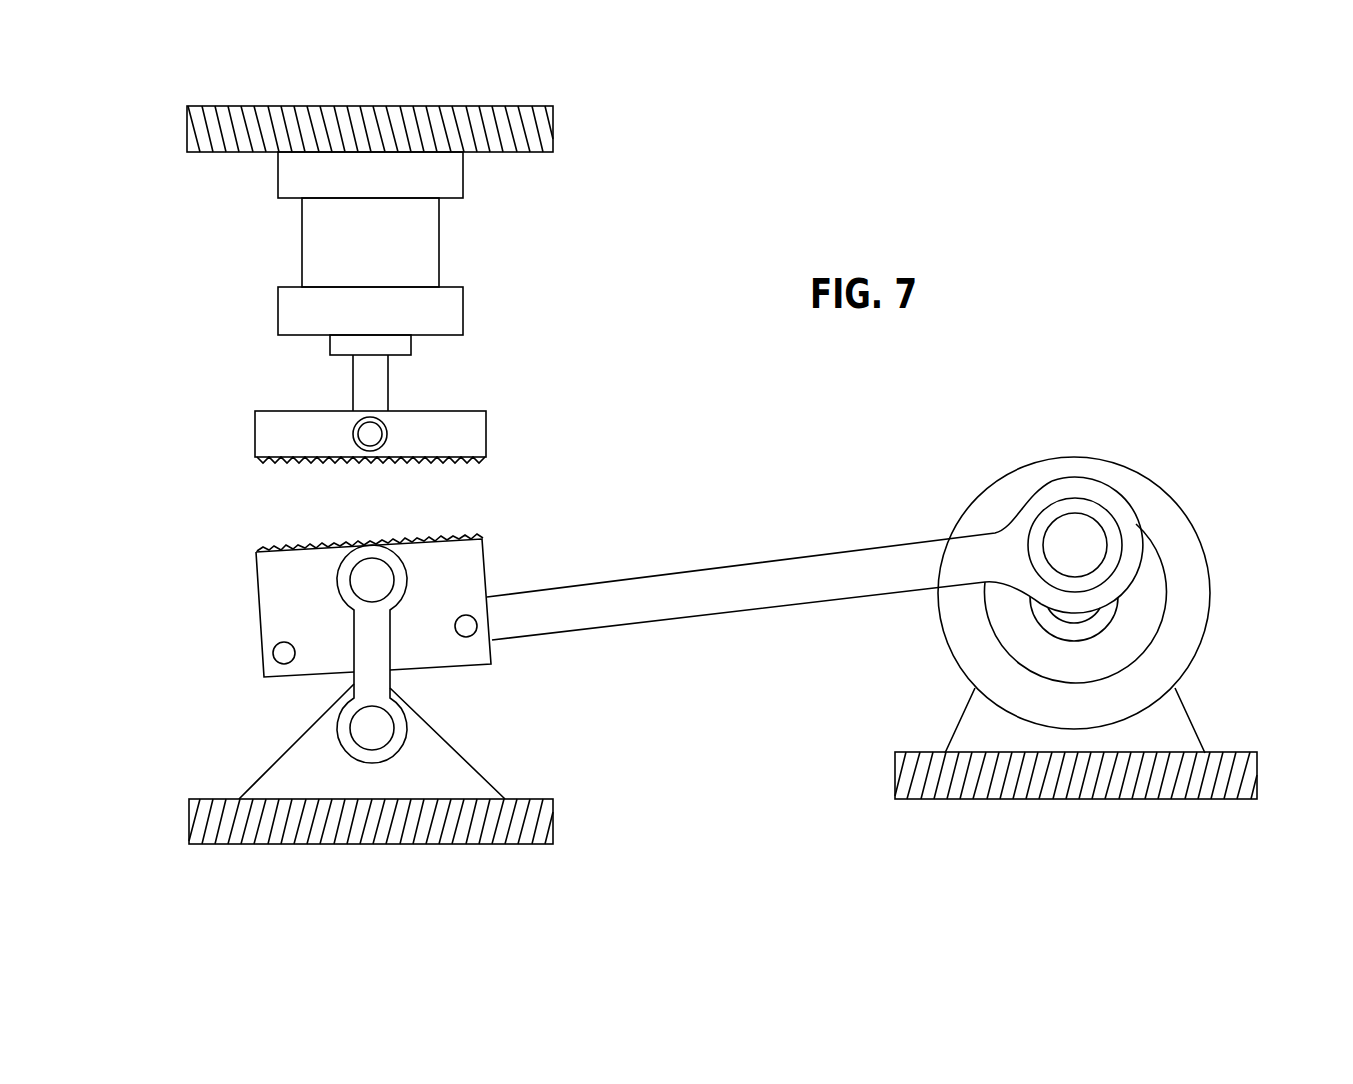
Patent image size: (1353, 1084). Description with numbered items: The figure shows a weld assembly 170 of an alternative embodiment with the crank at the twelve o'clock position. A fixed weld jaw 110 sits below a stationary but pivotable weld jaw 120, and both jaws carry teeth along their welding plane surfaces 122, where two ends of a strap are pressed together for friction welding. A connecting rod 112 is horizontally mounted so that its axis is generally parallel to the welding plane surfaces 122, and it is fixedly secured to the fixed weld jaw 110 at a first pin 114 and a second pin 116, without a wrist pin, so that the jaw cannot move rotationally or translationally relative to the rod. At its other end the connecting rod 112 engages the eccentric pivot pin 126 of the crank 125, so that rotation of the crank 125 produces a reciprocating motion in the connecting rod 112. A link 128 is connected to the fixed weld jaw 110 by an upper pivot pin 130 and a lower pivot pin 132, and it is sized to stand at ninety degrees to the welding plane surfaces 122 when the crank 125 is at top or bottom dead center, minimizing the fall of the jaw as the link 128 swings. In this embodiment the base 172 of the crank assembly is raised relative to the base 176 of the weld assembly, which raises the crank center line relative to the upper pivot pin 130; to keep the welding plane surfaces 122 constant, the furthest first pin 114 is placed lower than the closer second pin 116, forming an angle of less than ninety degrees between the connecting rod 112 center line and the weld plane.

The fixed weld jaw 110 is at (256, 594).
The connecting rod 112 is at (795, 608).
The first pin 114 is at (284, 653).
The second pin 116 is at (467, 627).
The stationary weld jaw 120 is at (257, 443).
The welding plane surfaces 122 is at (448, 462).
The crank 125 is at (1076, 624).
The eccentric pivot pin 126 is at (1077, 545).
The link 128 is at (367, 662).
The upper pivot pin 130 is at (375, 578).
The lower pivot pin 132 is at (377, 730).
The weld assembly 170 is at (700, 515).
The base of the crank assembly 172 is at (1005, 810).
The base of the weld assembly 176 is at (407, 852).